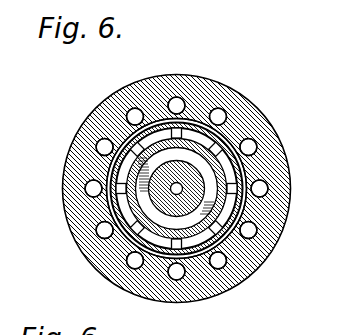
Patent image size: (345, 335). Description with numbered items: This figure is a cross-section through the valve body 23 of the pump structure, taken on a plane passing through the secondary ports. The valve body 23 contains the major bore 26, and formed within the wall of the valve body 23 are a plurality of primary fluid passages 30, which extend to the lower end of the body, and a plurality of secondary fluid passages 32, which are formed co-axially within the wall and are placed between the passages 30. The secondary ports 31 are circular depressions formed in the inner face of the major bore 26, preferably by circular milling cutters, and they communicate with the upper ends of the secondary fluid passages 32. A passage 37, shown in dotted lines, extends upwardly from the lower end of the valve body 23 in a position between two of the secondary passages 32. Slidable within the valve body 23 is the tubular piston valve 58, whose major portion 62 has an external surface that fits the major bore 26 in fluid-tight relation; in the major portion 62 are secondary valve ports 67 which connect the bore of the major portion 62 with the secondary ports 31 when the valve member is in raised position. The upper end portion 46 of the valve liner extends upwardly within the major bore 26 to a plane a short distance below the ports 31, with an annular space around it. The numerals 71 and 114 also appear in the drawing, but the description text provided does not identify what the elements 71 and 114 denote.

The valve body 23 is at (286, 156).
The major bore 26 is at (168, 116).
The primary fluid passages 30 is at (133, 116).
The secondary ports 31 is at (118, 152).
The secondary fluid passages 32 is at (96, 145).
The passage 37 is at (238, 90).
The upper end portion 46 is at (186, 224).
The piston valve 58 is at (66, 165).
The major portion 62 is at (133, 294).
The secondary valve ports 67 is at (83, 259).
The roller bearing 71 is at (180, 207).
The shaft 114 is at (186, 182).